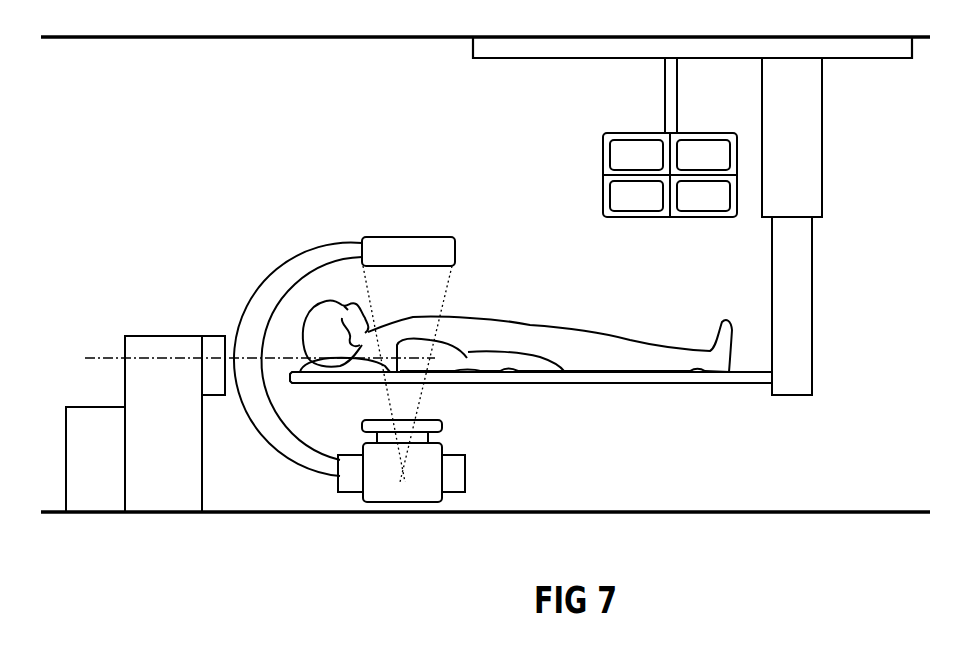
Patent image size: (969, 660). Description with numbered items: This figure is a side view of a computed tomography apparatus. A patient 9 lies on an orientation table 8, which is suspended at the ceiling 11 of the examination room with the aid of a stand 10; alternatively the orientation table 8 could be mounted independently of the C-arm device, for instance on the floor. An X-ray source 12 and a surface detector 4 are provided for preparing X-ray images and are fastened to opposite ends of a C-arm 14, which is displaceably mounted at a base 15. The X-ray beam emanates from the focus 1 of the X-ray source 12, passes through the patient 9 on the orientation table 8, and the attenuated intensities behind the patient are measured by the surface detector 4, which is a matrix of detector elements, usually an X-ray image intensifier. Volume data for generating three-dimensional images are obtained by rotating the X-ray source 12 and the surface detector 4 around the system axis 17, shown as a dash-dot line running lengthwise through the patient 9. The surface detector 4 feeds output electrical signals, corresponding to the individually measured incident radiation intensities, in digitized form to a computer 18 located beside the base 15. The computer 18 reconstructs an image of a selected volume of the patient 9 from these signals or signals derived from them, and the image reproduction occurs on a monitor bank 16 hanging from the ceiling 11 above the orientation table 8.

The focus 1 is at (403, 475).
The surface detector 4 is at (330, 178).
The orientation table 8 is at (636, 385).
The patient 9 is at (511, 327).
The stand 10 is at (808, 163).
The ceiling 11 is at (345, 40).
The X-ray source 12 is at (432, 455).
The C-arm 14 is at (270, 280).
The base 15 is at (165, 345).
The monitor bank 16 is at (690, 133).
The system axis 17 is at (100, 355).
The computer 18 is at (108, 483).